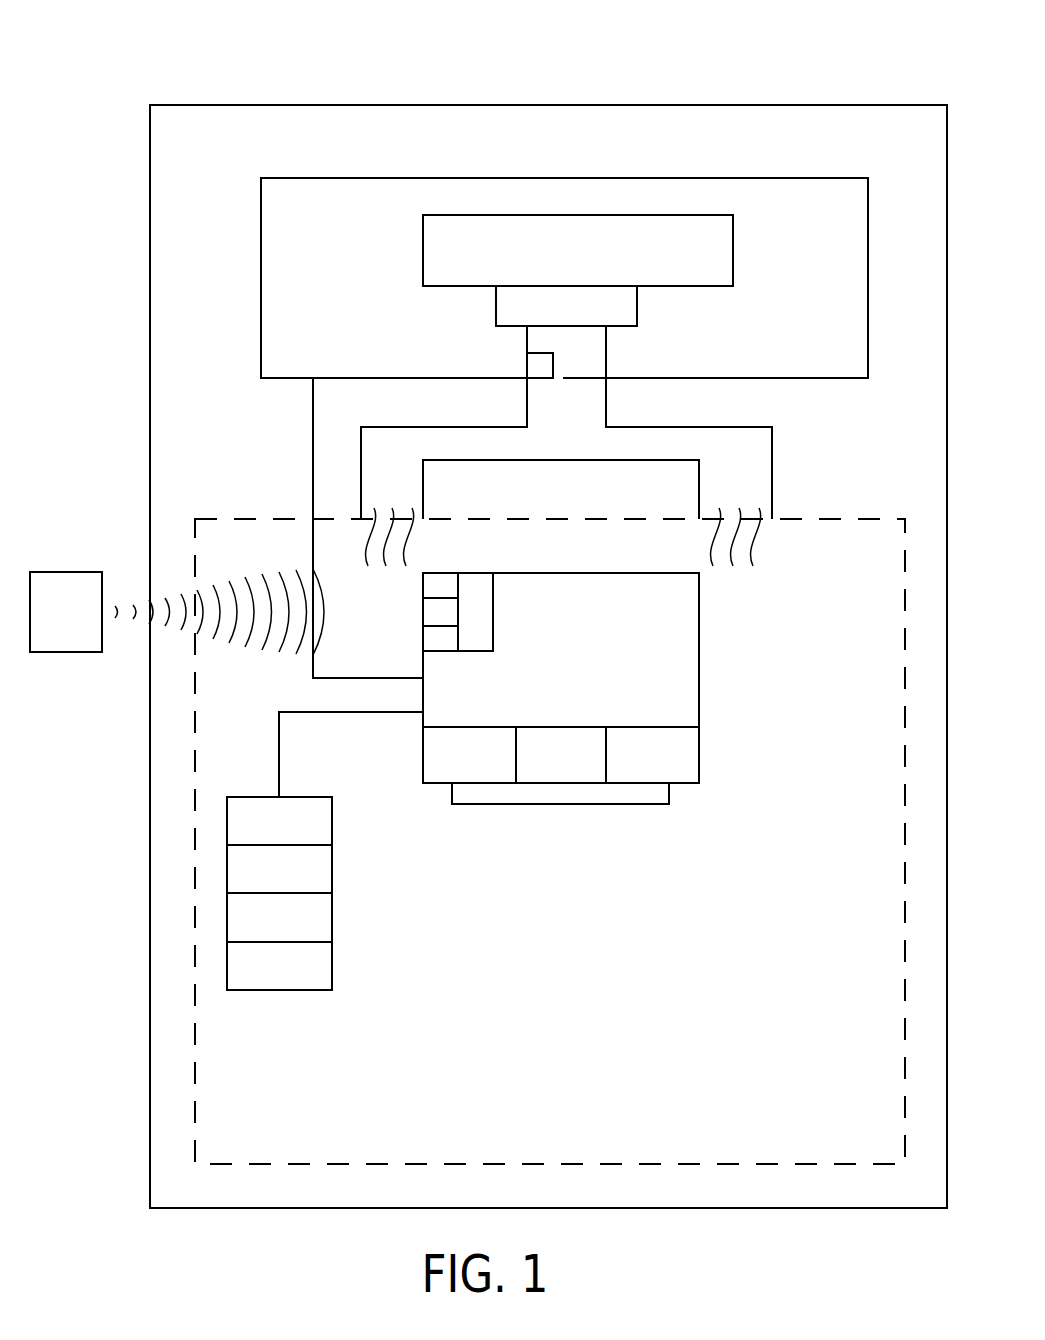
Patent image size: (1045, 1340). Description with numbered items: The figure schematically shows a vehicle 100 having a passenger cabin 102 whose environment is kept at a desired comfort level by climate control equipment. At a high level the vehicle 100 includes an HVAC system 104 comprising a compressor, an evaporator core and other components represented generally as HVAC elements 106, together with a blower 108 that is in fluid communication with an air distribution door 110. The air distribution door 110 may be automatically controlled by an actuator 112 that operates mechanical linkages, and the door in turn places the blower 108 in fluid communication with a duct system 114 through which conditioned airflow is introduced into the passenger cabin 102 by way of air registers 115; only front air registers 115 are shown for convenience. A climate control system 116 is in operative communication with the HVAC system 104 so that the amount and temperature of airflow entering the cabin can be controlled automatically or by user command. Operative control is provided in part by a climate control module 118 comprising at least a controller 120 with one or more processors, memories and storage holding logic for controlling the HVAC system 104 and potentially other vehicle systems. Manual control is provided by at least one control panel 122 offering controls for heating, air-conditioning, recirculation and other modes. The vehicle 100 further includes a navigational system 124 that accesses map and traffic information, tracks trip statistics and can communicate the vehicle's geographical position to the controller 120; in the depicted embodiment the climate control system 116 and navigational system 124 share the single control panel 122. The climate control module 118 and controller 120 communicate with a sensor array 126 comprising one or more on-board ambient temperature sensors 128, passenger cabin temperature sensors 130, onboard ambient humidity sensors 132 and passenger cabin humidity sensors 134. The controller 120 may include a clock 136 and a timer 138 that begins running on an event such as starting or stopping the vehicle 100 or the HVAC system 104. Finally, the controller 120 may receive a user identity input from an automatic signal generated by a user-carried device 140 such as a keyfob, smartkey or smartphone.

The vehicle 100 is at (155, 62).
The passenger cabin 102 is at (195, 987).
The HVAC system 104 is at (261, 279).
The HVAC elements 106 is at (545, 265).
The blower 108 is at (545, 318).
The air distribution door 110 is at (570, 380).
The actuator 112 is at (527, 367).
The duct system 114 is at (708, 427).
The air registers 115 is at (383, 499).
The climate control system 116 is at (699, 652).
The climate control module 118 is at (485, 587).
The controller 120 is at (442, 580).
The control panel 122 is at (560, 805).
The navigational system 124 is at (445, 770).
The sensor array 126 is at (538, 770).
The on-board ambient temperature sensor 128 is at (258, 836).
The passenger cabin temperature sensor 130 is at (258, 884).
The onboard ambient humidity sensor 132 is at (258, 932).
The passenger cabin humidity sensor 134 is at (258, 981).
The clock 136 is at (423, 587).
The timer 138 is at (423, 613).
The user-carried device 140 is at (44, 628).